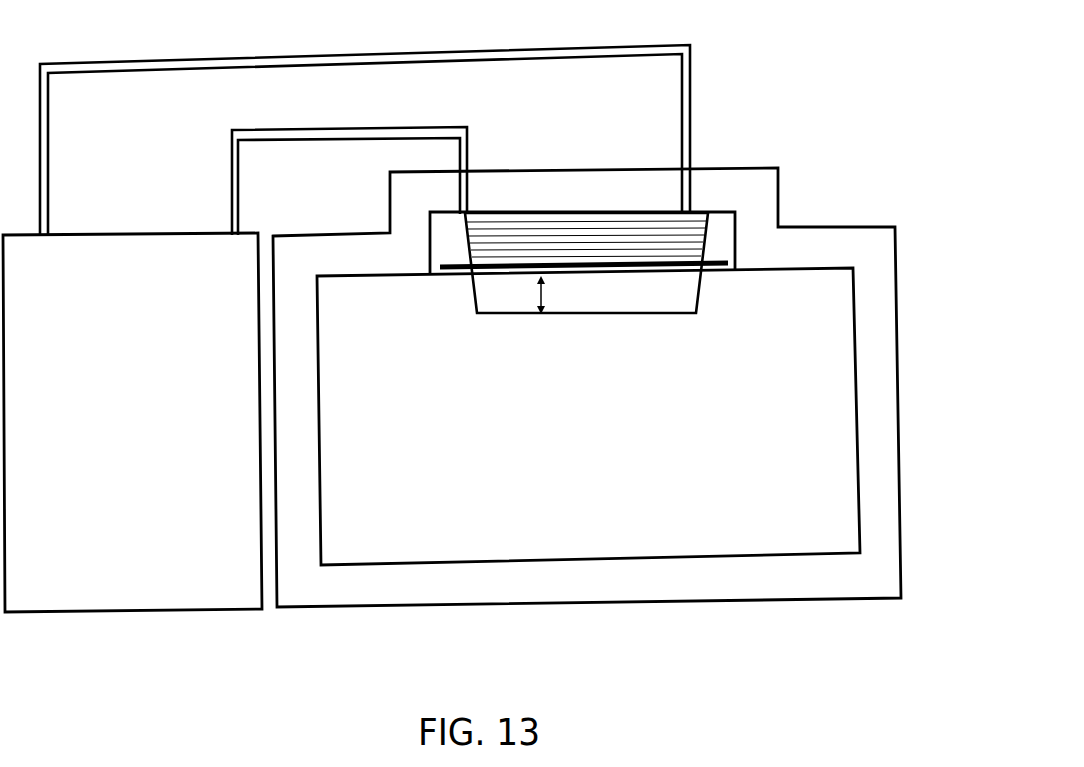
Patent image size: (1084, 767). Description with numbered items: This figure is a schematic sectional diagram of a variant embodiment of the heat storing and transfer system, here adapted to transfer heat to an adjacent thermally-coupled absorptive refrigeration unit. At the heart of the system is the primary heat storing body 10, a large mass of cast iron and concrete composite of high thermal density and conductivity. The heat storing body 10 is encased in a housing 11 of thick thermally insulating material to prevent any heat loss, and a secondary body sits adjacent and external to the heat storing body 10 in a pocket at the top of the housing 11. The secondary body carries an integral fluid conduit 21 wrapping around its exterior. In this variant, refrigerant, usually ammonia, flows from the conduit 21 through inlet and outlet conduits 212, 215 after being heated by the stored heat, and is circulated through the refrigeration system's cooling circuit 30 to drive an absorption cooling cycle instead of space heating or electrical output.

The heat storing body 10 is at (460, 443).
The housing 11 is at (869, 394).
The fluid conduit 21 is at (693, 240).
The cooling circuit 30 is at (128, 407).
The inner conductive layer 212 is at (472, 153).
The outer conductive layer 215 is at (693, 87).